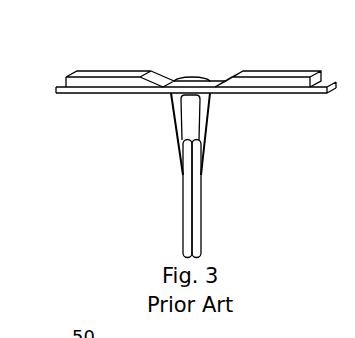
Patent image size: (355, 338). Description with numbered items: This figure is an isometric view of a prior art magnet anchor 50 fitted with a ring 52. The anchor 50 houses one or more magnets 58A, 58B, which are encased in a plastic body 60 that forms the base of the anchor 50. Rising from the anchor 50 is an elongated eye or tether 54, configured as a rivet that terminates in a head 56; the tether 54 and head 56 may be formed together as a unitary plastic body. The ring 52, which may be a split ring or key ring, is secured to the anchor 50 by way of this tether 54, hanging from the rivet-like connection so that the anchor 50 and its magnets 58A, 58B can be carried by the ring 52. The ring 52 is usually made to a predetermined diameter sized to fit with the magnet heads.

The magnet anchor 50 is at (68, 44).
The ring 52 is at (184, 214).
The tether 54 is at (181, 144).
The head 56 is at (190, 79).
The magnet 58A is at (127, 70).
The magnet 58B is at (261, 71).
The plastic body 60 is at (262, 94).